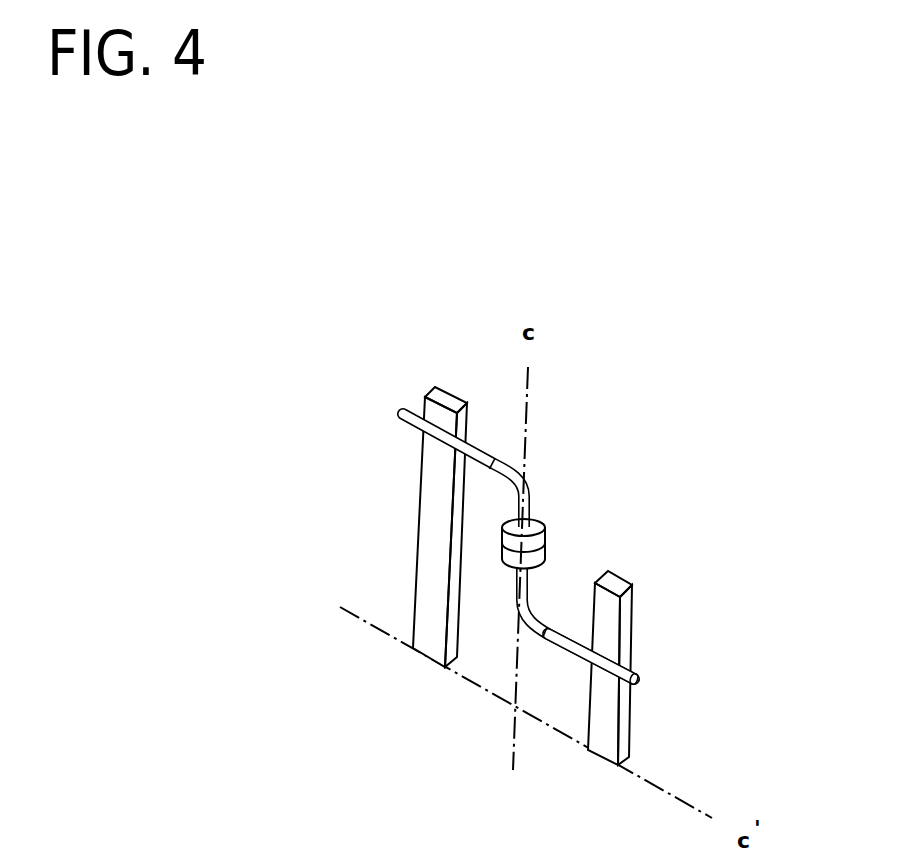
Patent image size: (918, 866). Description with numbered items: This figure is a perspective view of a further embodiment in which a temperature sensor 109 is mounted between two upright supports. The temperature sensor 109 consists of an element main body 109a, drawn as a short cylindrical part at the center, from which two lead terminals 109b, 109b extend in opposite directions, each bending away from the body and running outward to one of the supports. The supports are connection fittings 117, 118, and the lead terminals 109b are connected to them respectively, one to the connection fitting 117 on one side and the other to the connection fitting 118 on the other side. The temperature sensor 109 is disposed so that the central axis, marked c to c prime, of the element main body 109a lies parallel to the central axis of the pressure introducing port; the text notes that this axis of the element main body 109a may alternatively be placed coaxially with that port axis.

The temperature sensor 109 is at (607, 535).
The element main body 109a is at (545, 540).
The lead terminal 109b is at (478, 447).
The connection fitting 117 is at (432, 542).
The connection fitting 118 is at (602, 717).